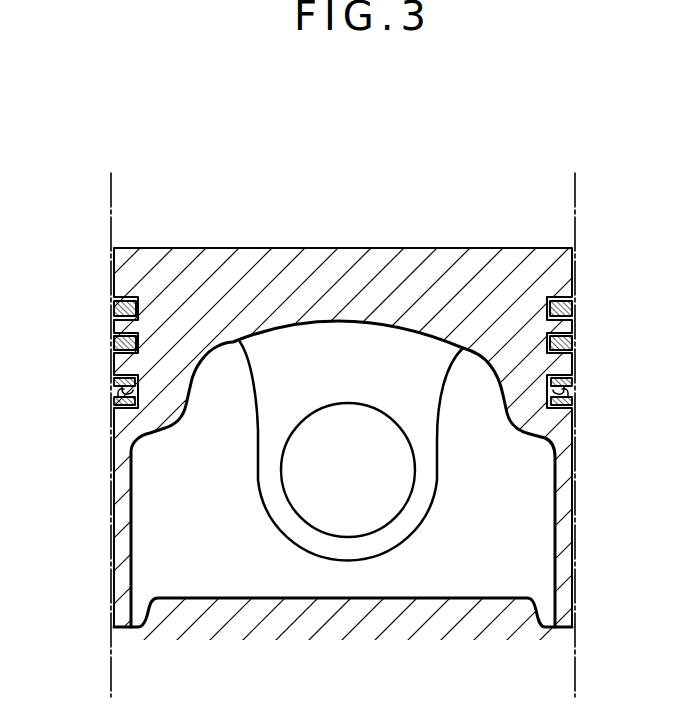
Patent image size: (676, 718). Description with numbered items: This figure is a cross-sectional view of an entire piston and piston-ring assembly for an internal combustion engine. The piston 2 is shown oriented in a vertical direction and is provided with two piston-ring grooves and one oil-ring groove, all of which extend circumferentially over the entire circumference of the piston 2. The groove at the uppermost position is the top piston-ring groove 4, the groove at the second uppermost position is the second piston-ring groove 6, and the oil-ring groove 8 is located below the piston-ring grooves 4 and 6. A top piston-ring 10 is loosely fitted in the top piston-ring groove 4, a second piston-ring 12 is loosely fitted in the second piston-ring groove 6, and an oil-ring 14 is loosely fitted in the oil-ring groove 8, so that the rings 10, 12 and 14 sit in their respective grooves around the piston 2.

The piston 2 is at (376, 272).
The top piston-ring groove 4 is at (574, 310).
The second piston-ring groove 6 is at (574, 343).
The oil-ring groove 8 is at (576, 393).
The top piston-ring 10 is at (113, 307).
The second piston-ring 12 is at (113, 340).
The oil-ring 14 is at (113, 393).